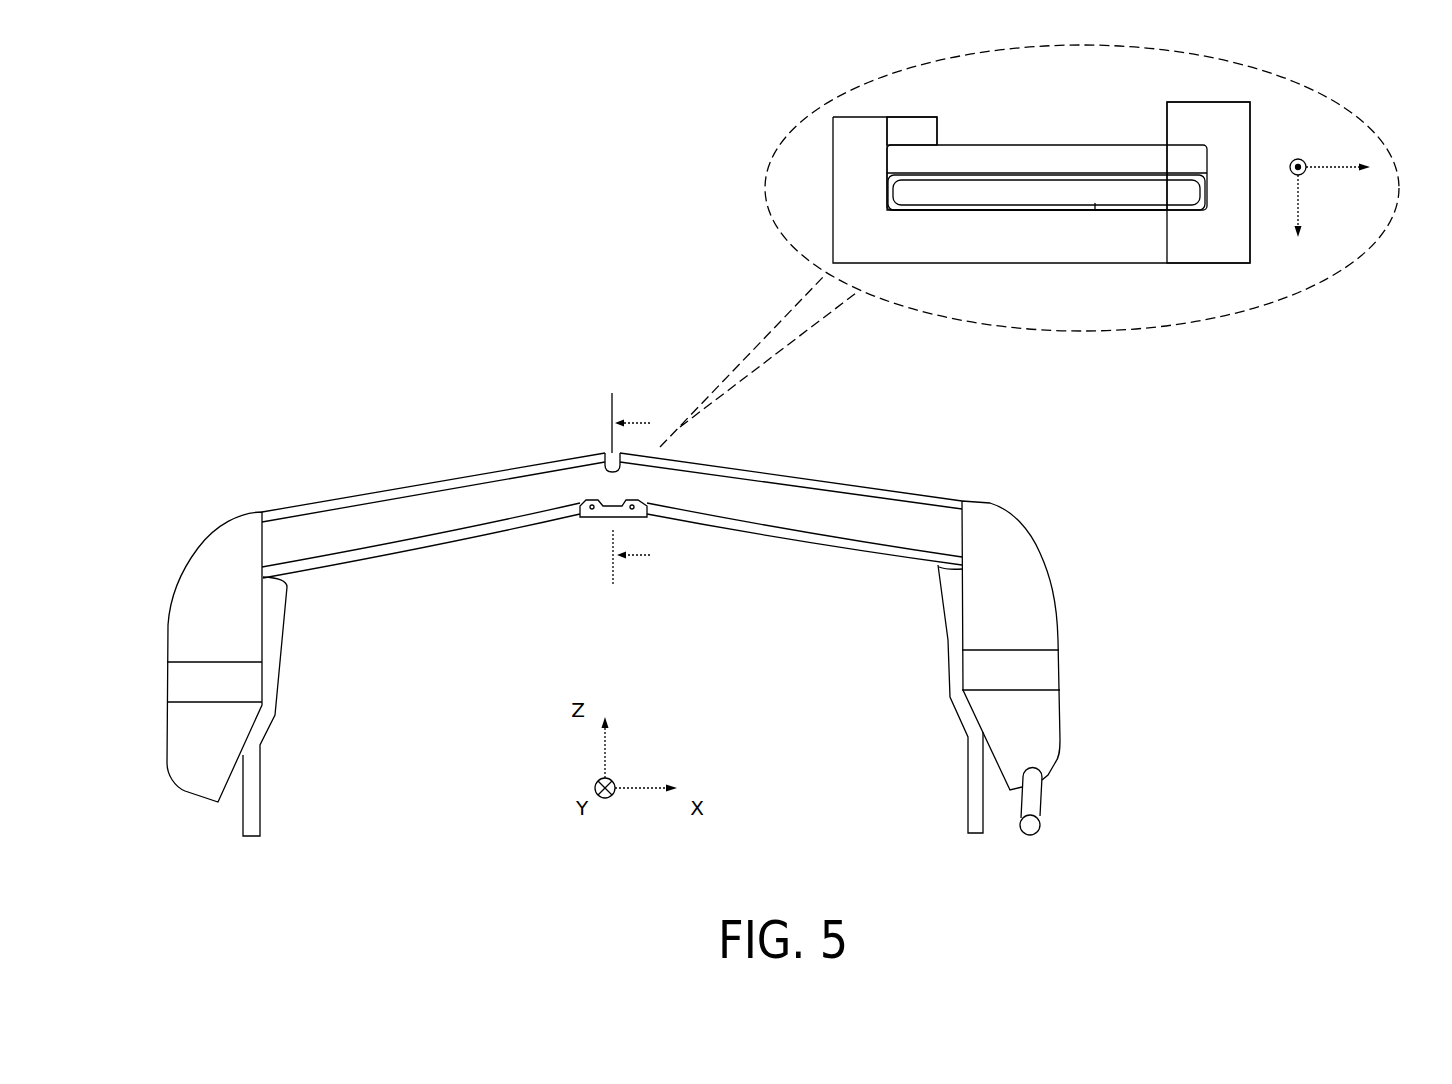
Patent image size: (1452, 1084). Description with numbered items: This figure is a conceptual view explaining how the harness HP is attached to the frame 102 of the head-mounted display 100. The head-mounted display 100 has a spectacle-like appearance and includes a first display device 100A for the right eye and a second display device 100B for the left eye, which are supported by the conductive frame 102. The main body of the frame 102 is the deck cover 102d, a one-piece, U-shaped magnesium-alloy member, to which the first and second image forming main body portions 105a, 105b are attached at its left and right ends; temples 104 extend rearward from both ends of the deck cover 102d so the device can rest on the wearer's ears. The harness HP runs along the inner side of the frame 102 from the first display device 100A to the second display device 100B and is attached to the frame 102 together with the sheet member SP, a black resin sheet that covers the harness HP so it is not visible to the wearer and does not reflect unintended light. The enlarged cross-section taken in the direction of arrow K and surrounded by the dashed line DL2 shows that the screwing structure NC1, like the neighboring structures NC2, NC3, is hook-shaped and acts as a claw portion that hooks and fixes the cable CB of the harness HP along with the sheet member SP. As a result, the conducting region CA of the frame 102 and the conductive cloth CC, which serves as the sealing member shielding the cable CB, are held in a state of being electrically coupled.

The head-mounted display 100 is at (602, 275).
The first display device 100A is at (215, 408).
The second display device 100B is at (955, 455).
The frame 102 is at (543, 447).
The deck cover 102d is at (510, 460).
The temples 104 is at (262, 718).
The first image forming main body portion 105a is at (212, 543).
The second image forming main body portion 105b is at (1012, 543).
The harness HP is at (422, 510).
The sheet member SP is at (470, 512).
The screwing structure NC1 is at (610, 453).
The second notch NC2 is at (580, 507).
The third notch NC3 is at (647, 507).
The conducting region CA is at (1095, 205).
The cable CB is at (1070, 192).
The conductive cloth CC is at (1143, 210).
The dashed line DL2 is at (1172, 320).
The arrow K is at (639, 489).